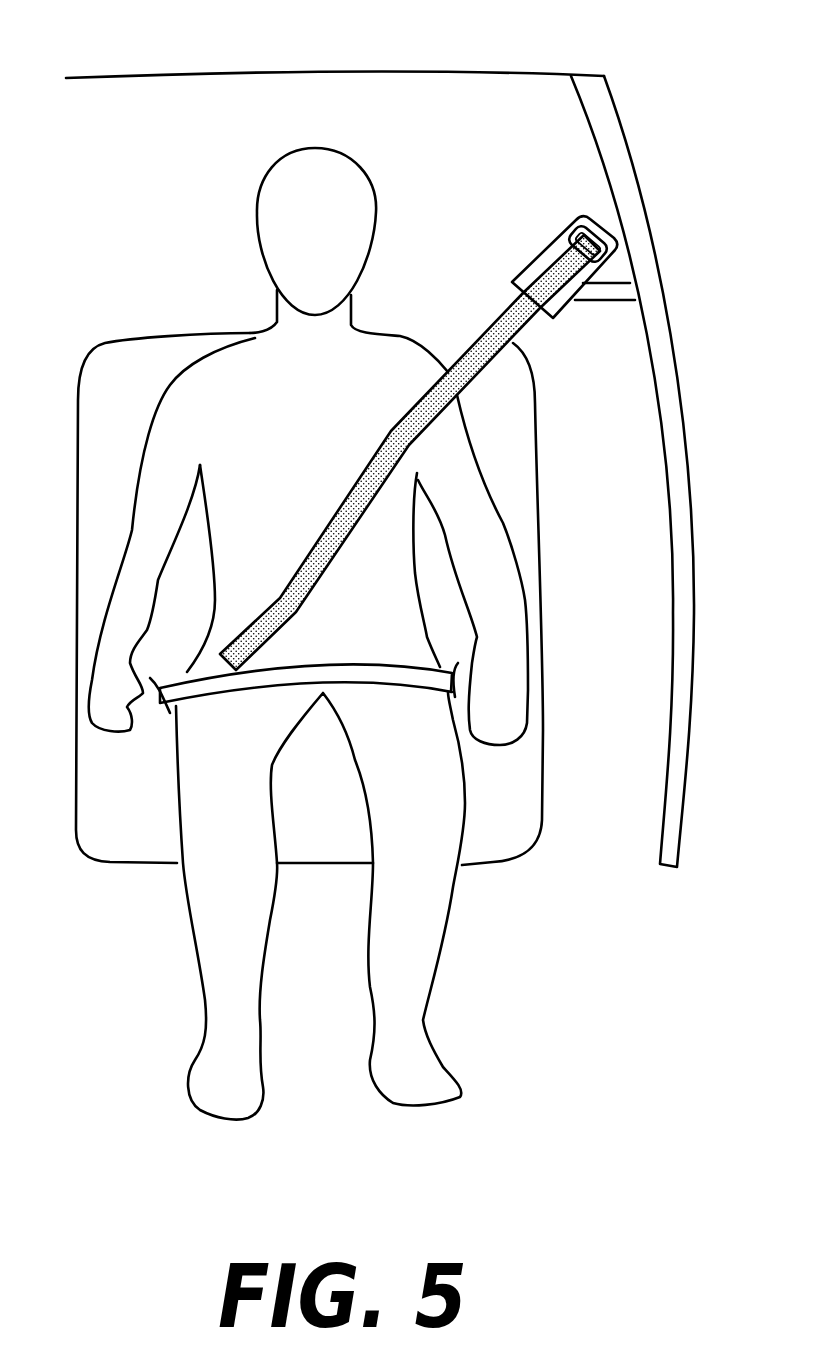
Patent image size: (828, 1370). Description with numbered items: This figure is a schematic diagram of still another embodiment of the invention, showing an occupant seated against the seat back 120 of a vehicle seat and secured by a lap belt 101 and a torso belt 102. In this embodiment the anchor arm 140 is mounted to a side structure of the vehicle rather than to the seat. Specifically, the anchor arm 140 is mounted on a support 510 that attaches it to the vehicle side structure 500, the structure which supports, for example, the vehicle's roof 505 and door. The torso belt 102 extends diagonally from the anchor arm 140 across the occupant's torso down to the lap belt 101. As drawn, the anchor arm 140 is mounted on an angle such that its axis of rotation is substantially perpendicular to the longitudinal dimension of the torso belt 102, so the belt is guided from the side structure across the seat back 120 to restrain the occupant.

The lap belt 101 is at (280, 673).
The torso belt 102 is at (287, 597).
The seat back 120 is at (128, 363).
The anchor arm 140 is at (564, 230).
The vehicle side structure 500 is at (650, 218).
The roof 505 is at (516, 70).
The support 510 is at (604, 300).